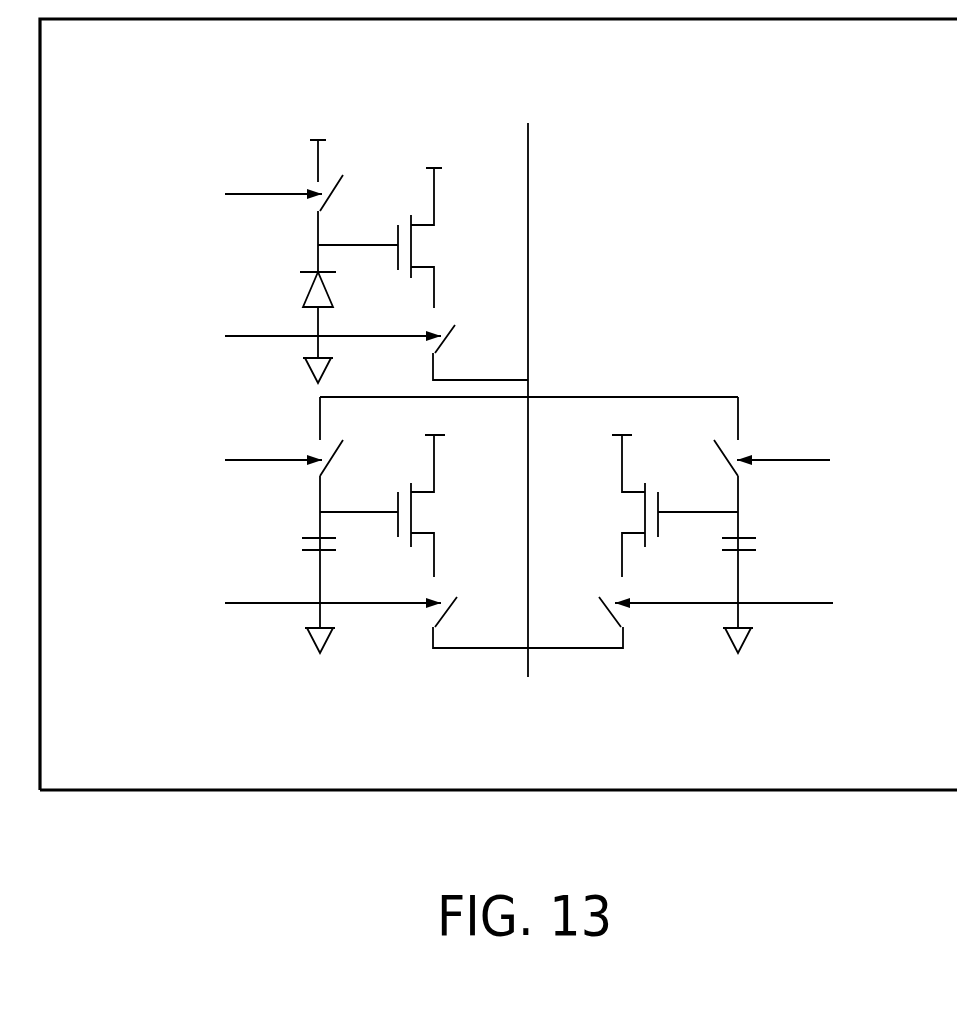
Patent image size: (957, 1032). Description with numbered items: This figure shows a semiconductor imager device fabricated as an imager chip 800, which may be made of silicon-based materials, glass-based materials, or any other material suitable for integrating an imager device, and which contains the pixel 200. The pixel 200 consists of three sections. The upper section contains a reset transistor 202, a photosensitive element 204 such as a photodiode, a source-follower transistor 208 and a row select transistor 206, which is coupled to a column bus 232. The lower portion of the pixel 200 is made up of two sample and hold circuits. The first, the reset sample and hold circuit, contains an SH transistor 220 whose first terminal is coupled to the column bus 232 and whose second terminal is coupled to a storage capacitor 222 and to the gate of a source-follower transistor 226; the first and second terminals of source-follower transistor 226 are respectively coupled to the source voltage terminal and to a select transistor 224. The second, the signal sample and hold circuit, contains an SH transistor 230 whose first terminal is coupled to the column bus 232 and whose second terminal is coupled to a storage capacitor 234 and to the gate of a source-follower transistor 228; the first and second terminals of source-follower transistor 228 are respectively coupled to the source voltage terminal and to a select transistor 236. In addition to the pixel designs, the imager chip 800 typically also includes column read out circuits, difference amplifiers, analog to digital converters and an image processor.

The pixel 200 is at (772, 140).
The reset transistor 202 is at (335, 163).
The photosensitive element 204 is at (305, 291).
The row select transistor 206 is at (447, 318).
The source-follower transistor 208 is at (447, 225).
The SH transistor 220 is at (337, 430).
The storage capacitor 222 is at (298, 542).
The select transistor 224 is at (448, 588).
The source-follower transistor 226 is at (450, 493).
The source-follower transistor 228 is at (608, 493).
The SH transistor 230 is at (722, 432).
The column bus 232 is at (530, 233).
The storage capacitor 234 is at (758, 542).
The select transistor 236 is at (610, 588).
The imager chip 800 is at (808, 792).